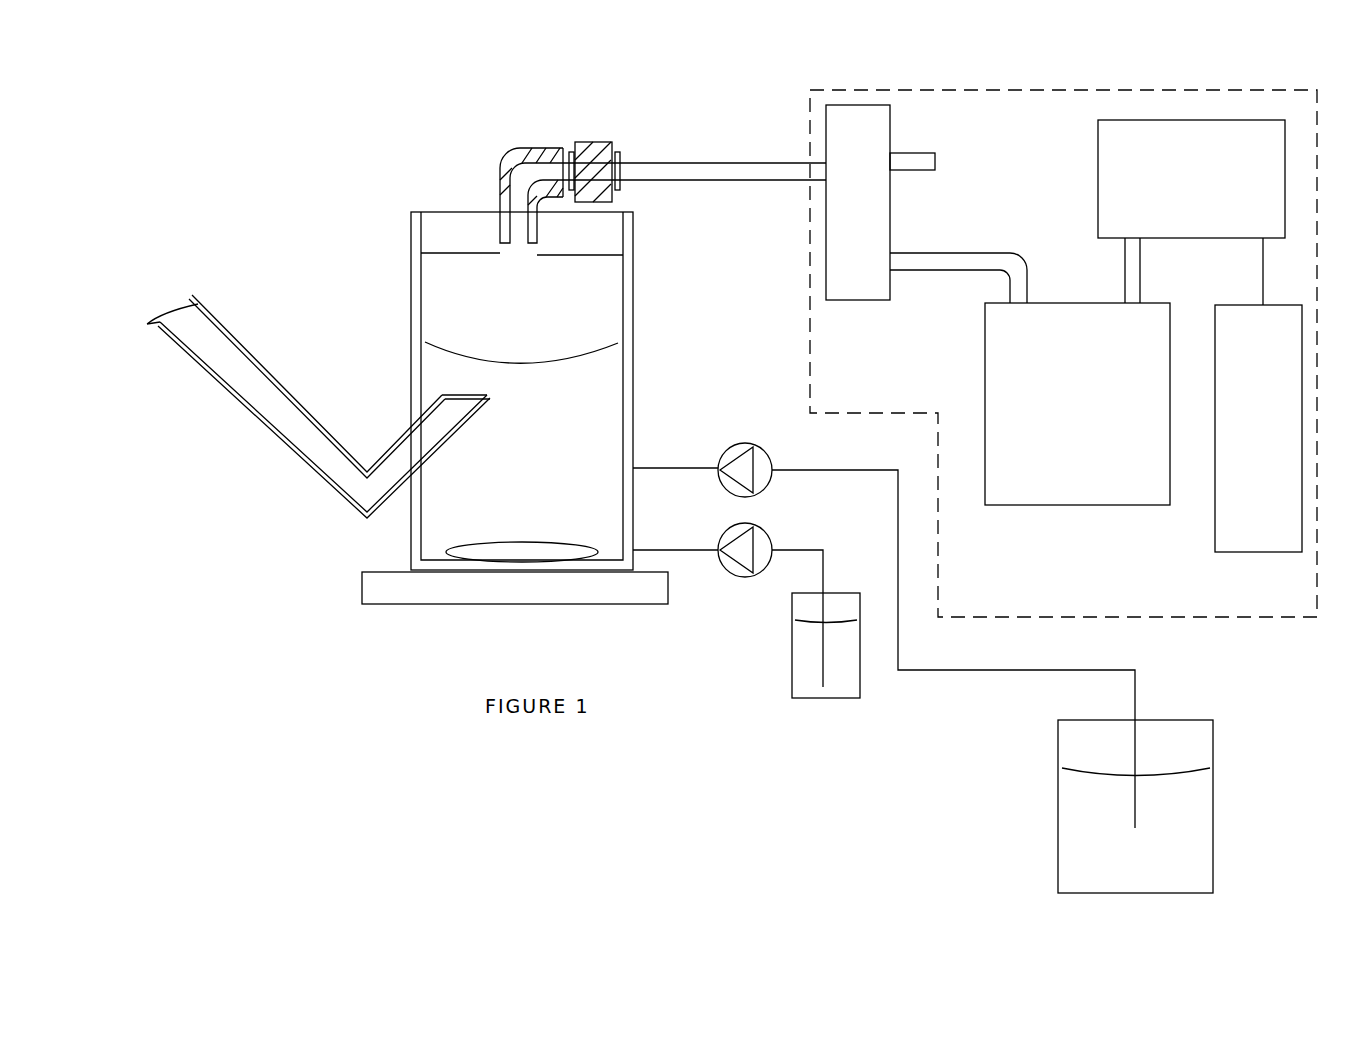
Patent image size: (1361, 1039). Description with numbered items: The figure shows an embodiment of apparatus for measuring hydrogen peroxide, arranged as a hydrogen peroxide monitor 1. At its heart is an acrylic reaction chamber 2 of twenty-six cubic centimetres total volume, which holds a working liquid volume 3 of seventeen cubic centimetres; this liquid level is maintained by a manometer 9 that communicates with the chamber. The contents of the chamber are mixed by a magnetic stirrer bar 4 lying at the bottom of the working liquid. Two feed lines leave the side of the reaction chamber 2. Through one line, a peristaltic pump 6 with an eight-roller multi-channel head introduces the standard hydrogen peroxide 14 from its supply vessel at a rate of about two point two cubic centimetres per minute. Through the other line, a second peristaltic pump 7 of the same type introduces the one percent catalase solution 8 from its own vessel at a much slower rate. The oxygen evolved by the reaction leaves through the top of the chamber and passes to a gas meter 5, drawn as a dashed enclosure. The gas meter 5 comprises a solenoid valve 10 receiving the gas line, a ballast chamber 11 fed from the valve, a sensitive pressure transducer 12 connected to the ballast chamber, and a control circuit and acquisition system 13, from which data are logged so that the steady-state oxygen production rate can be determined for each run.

The hydrogen peroxide monitor 1 is at (332, 256).
The acrylic reaction chamber 2 is at (628, 313).
The working liquid volume 3 is at (600, 413).
The magnetic stirrer bar 4 is at (510, 553).
The gas meter 5 is at (1068, 91).
The peristaltic pump 6 is at (758, 455).
The peristaltic pump 7 is at (760, 538).
The catalase solution 8 is at (843, 655).
The manometer 9 is at (250, 383).
The solenoid valve 10 is at (872, 127).
The ballast chamber 11 is at (1077, 371).
The sensitive pressure transducer 12 is at (1191, 212).
The control circuit and acquisition system 13 is at (1253, 557).
The standard hydrogen peroxide 14 is at (1058, 813).